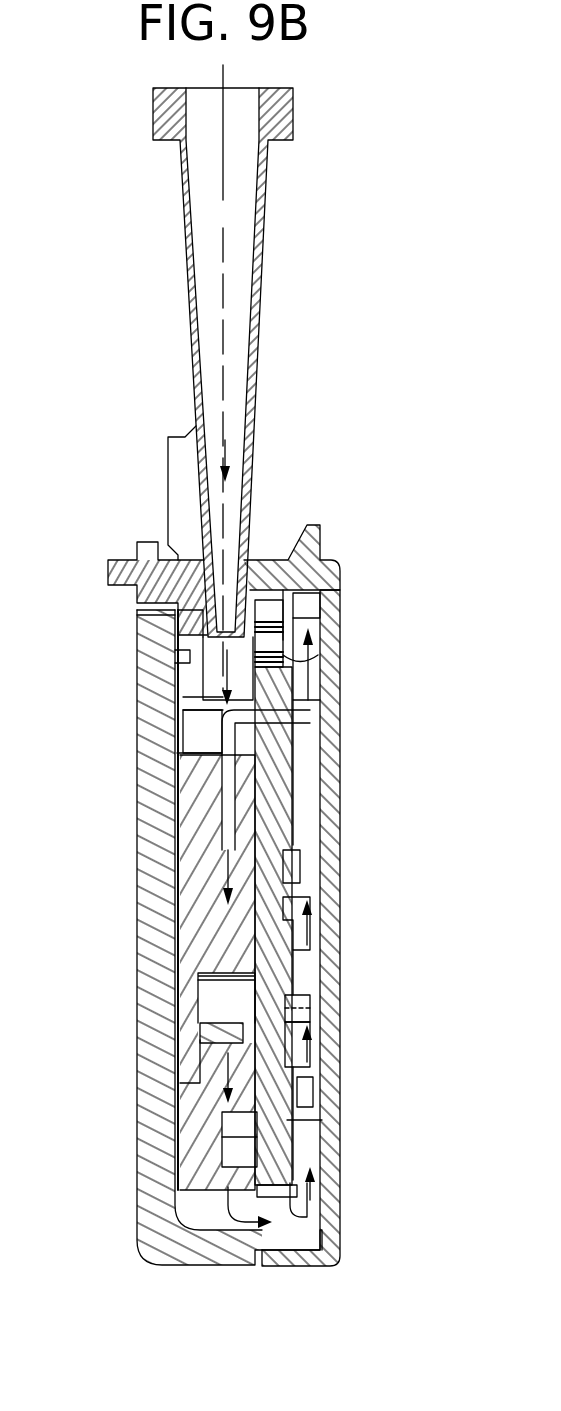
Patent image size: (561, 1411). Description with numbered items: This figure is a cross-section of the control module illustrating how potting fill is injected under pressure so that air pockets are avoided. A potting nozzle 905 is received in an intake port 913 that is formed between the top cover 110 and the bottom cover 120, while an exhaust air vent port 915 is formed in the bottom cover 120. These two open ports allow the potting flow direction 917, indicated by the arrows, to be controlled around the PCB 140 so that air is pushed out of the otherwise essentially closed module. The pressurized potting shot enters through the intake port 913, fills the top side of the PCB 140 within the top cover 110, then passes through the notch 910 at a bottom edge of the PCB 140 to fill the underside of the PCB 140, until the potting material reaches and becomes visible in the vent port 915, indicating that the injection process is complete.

The potting nozzle 905 is at (253, 472).
The intake port 913 is at (205, 625).
The exhaust air vent port 915 is at (310, 600).
The top cover 110 is at (138, 872).
The bottom cover 120 is at (355, 1069).
The potting flow direction 917 is at (222, 899).
The PCB 140 is at (277, 877).
The notch 910 is at (257, 1258).